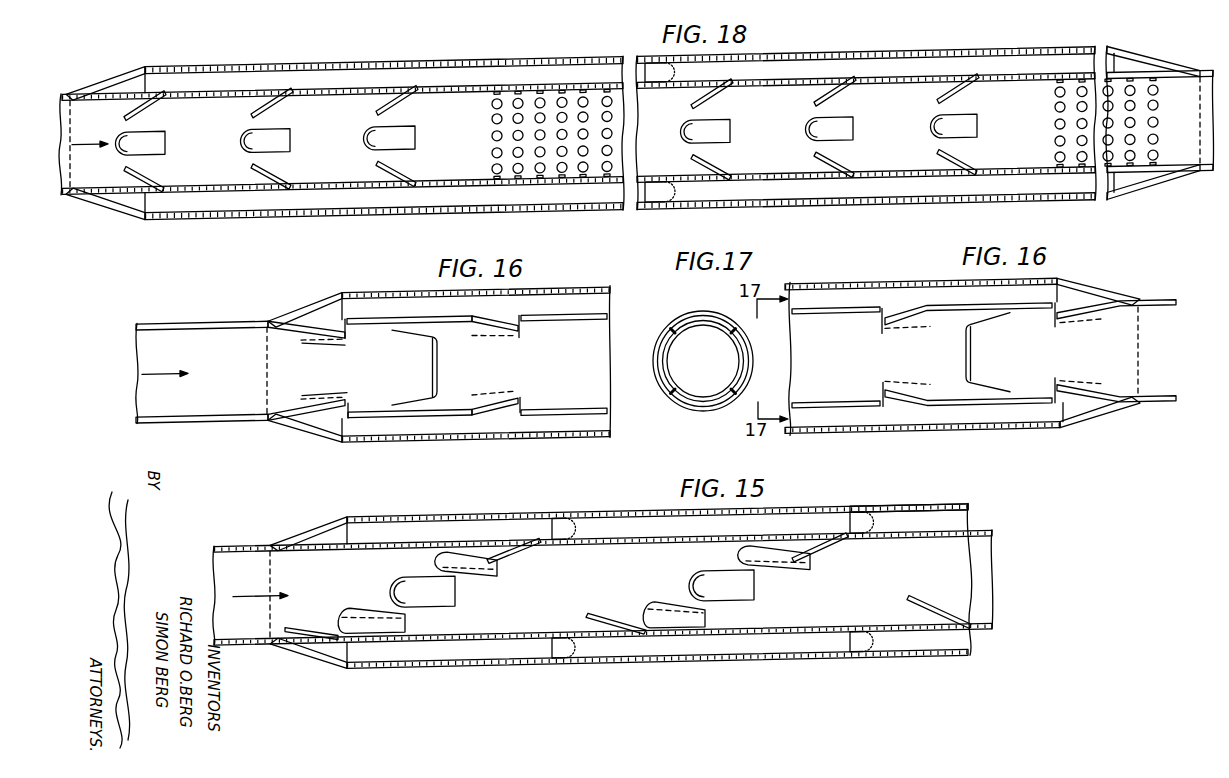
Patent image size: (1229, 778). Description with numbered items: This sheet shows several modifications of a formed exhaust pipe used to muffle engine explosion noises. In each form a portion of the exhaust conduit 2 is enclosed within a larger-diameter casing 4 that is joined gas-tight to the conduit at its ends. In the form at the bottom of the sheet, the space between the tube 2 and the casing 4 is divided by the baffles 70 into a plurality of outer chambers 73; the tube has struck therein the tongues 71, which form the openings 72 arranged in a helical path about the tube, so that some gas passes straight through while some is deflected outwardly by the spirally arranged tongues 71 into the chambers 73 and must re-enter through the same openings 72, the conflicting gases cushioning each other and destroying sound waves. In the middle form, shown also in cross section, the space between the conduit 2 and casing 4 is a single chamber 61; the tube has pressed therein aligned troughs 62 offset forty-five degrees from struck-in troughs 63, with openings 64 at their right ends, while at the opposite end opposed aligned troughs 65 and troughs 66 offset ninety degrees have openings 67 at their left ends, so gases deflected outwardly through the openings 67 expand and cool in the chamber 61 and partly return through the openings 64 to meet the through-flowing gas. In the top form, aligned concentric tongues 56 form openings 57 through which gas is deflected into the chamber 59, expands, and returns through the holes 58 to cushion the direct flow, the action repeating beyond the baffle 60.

In FIG. 18, the exhaust conduit 2 is at (458, 92).
In FIG. 16, the exhaust conduit 2 is at (217, 318).
In FIG. 15, the exhaust conduit 2 is at (232, 538).
In FIG. 18, the casing 4 is at (870, 66).
In FIG. 16, the casing 4 is at (1060, 281).
In FIG. 15, the casing 4 is at (938, 512).
In FIG. 18, the tongues 56 is at (376, 113).
In FIG. 18, the openings 57 is at (372, 92).
In FIG. 18, the holes 58 is at (492, 110).
In FIG. 18, the chamber 59 is at (367, 211).
In FIG. 18, the baffle 60 is at (644, 72).
In FIG. 16, the chamber 61 is at (533, 431).
In FIG. 16, the aligned troughs 62 is at (498, 325).
In FIG. 16, the struck-in troughs 63 is at (408, 349).
In FIG. 16, the openings 64 is at (352, 407).
In FIG. 16, the aligned troughs 65 is at (1073, 398).
In FIG. 16, the troughs 66 is at (979, 352).
In FIG. 16, the openings 67 is at (881, 316).
In FIG. 15, the baffles 70 is at (850, 645).
In FIG. 15, the tongues 71 is at (513, 553).
In FIG. 15, the openings 72 is at (502, 540).
In FIG. 15, the outer chambers 73 is at (473, 650).